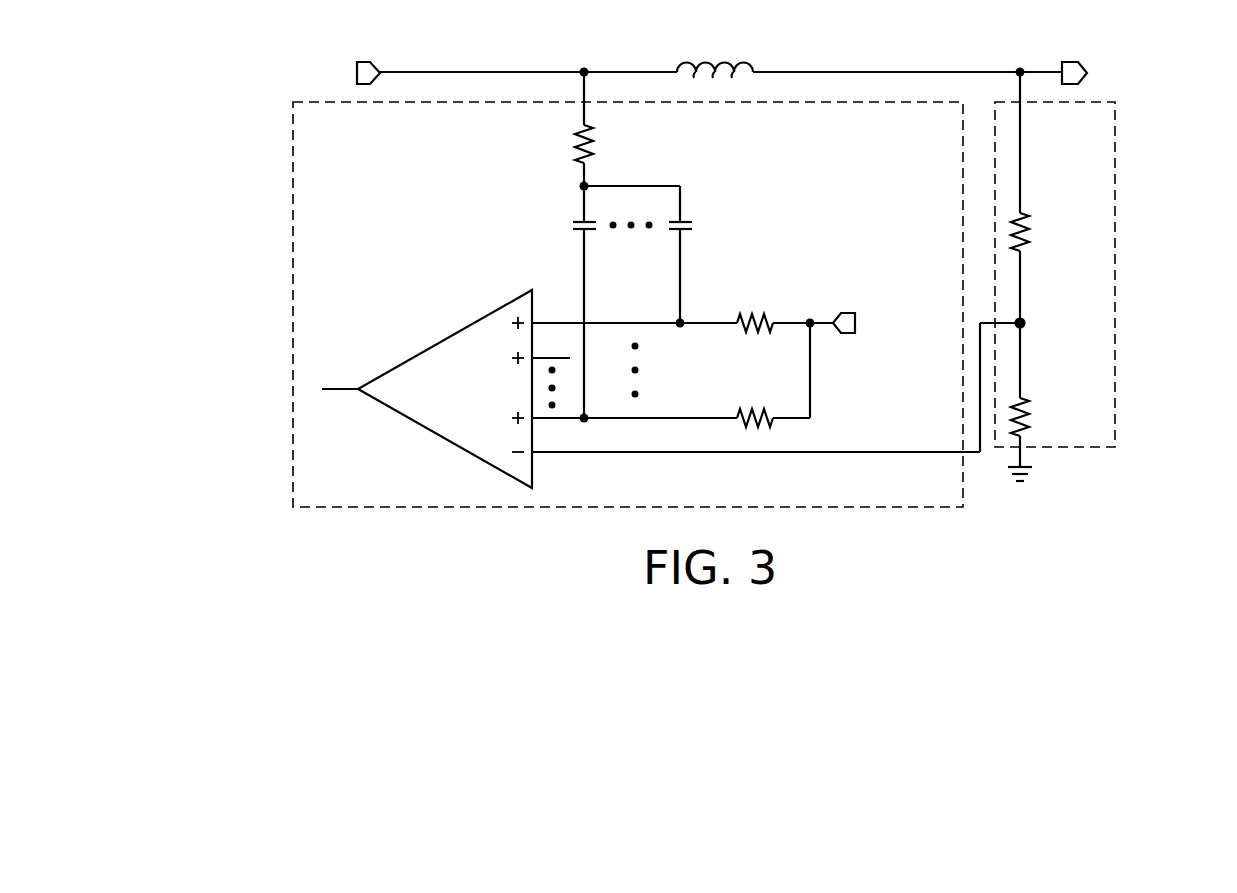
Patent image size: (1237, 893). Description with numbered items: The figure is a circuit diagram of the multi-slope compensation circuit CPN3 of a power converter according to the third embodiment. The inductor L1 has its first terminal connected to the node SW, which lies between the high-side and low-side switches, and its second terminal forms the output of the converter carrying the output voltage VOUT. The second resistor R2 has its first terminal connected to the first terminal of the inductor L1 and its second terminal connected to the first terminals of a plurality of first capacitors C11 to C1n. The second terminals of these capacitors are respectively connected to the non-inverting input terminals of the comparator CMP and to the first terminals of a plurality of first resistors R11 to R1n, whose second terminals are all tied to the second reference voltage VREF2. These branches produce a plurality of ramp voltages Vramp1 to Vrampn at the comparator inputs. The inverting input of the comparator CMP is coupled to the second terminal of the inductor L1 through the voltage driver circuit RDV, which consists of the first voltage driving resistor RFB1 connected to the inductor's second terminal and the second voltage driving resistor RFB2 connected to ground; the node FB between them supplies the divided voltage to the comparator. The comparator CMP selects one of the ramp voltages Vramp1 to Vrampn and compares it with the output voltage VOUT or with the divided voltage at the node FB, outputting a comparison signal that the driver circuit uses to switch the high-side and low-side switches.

The node SW is at (344, 74).
The output voltage VOUT is at (1117, 74).
The inductor L1 is at (715, 51).
The multi-slope compensation circuit CPN3 is at (293, 307).
The second resistor R2 is at (607, 147).
The first capacitor C1n is at (609, 320).
The first capacitor C11 is at (704, 272).
The comparator CMP is at (448, 338).
The ramp voltage Vramp1 is at (634, 309).
The ramp voltage Vrampn is at (634, 434).
The first resistor R11 is at (783, 306).
The first resistor R1n is at (771, 375).
The second reference voltage VREF2 is at (893, 324).
The voltage driver circuit RDV is at (1117, 272).
The first voltage driving resistor RFB1 is at (1062, 197).
The node FB is at (1043, 324).
The second voltage driving resistor RFB2 is at (1062, 395).